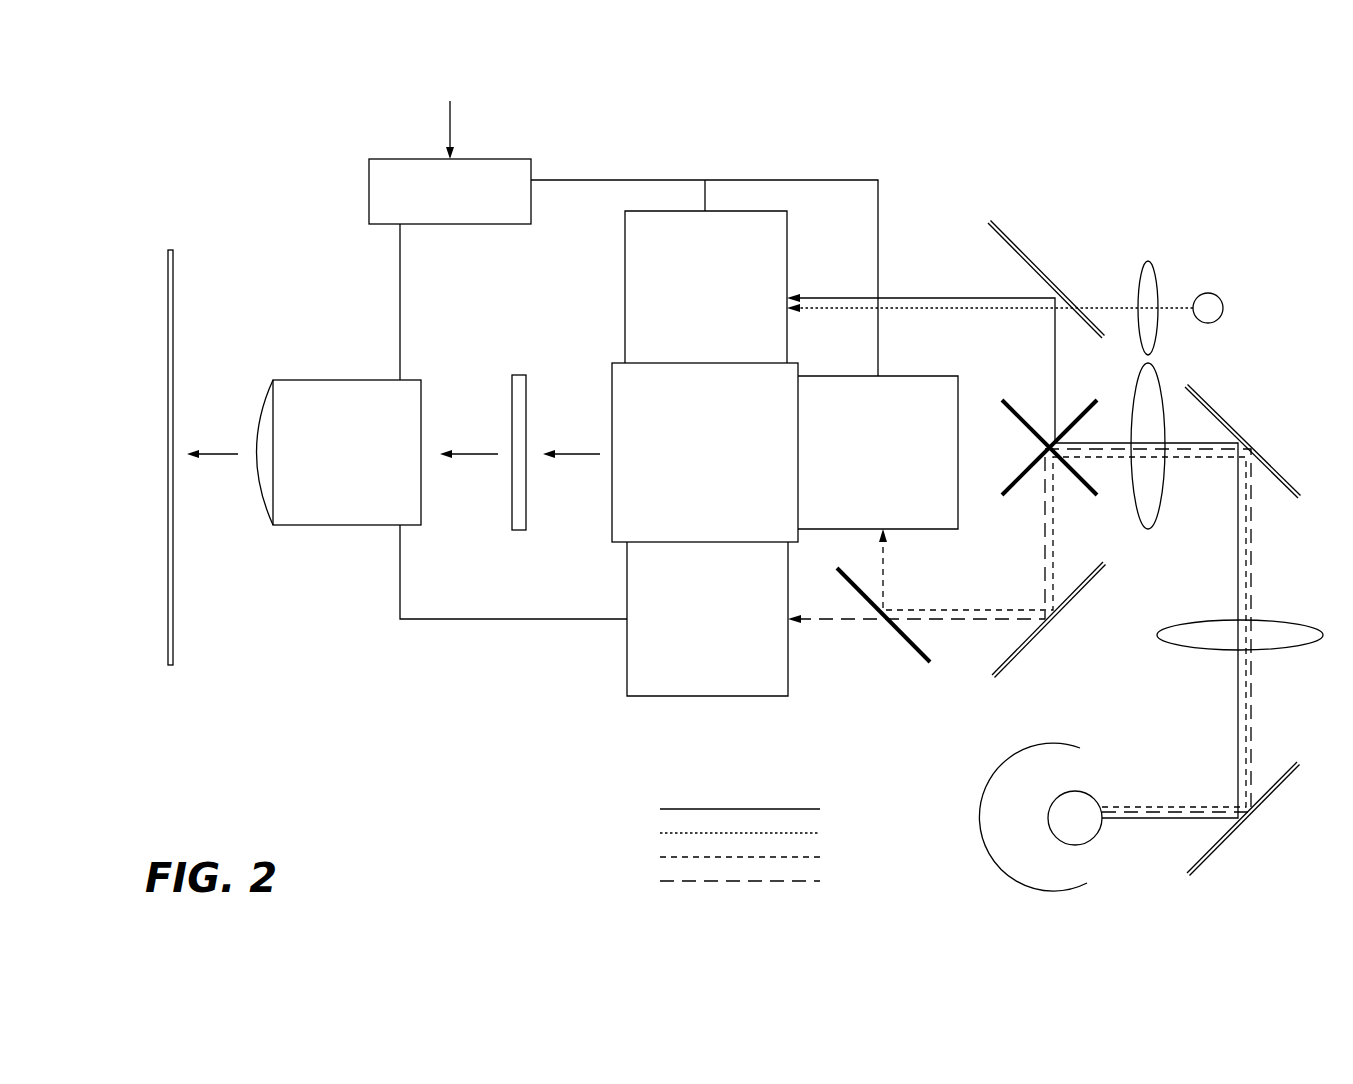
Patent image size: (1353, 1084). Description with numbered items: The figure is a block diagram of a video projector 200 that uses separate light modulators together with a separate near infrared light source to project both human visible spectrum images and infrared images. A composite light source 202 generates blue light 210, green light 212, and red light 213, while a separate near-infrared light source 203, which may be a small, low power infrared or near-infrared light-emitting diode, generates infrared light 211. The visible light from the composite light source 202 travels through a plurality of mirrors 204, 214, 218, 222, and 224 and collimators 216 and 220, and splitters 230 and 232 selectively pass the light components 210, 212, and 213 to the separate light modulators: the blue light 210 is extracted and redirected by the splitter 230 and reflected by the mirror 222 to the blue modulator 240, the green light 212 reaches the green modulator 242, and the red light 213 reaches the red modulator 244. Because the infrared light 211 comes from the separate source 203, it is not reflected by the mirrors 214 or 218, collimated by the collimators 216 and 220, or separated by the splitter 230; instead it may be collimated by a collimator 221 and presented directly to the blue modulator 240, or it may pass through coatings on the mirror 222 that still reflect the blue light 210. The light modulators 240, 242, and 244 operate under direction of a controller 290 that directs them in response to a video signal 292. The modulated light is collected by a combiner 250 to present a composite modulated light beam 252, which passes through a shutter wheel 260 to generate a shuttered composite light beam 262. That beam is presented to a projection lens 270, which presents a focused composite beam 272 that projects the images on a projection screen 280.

The video projector 200 is at (243, 137).
The composite light source 202 is at (1047, 818).
The near-infrared light source 203 is at (1223, 300).
The mirror 204 is at (990, 782).
The blue light 210 is at (1130, 820).
The infrared light 211 is at (1112, 308).
The green light 212 is at (1132, 807).
The red light 213 is at (1167, 812).
The mirror 214 is at (1232, 838).
The collimator 216 is at (1270, 650).
The mirror 218 is at (1270, 462).
The collimator 220 is at (1157, 330).
The collimator 221 is at (1153, 266).
The mirror 222 is at (1018, 248).
The mirror 224 is at (1027, 650).
The splitter 230 is at (1010, 404).
The splitter 232 is at (905, 645).
The blue modulator 240 is at (788, 257).
The green modulator 242 is at (905, 376).
The red modulator 244 is at (788, 655).
The combiner 250 is at (612, 532).
The composite modulated light beam 252 is at (563, 454).
The shutter wheel 260 is at (517, 375).
The shuttered composite light beam 262 is at (462, 454).
The projection lens 270 is at (350, 380).
The focused composite beam 272 is at (213, 454).
The projection screen 280 is at (173, 289).
The controller 290 is at (369, 178).
The video signal 292 is at (452, 141).